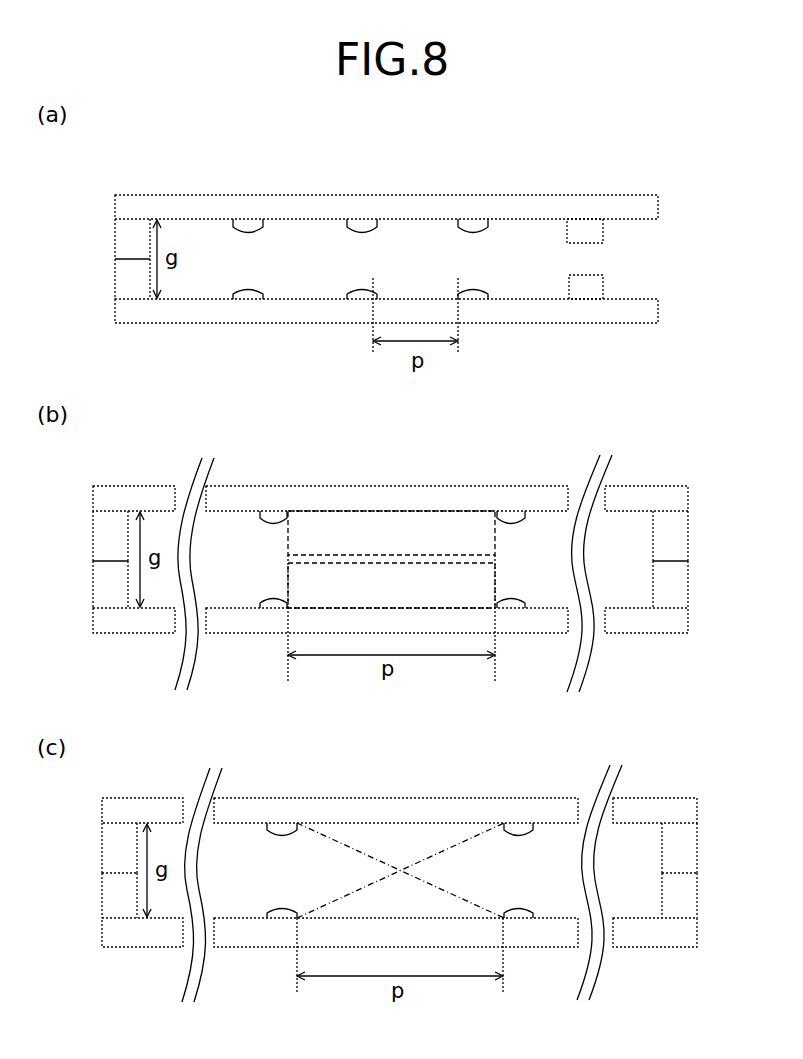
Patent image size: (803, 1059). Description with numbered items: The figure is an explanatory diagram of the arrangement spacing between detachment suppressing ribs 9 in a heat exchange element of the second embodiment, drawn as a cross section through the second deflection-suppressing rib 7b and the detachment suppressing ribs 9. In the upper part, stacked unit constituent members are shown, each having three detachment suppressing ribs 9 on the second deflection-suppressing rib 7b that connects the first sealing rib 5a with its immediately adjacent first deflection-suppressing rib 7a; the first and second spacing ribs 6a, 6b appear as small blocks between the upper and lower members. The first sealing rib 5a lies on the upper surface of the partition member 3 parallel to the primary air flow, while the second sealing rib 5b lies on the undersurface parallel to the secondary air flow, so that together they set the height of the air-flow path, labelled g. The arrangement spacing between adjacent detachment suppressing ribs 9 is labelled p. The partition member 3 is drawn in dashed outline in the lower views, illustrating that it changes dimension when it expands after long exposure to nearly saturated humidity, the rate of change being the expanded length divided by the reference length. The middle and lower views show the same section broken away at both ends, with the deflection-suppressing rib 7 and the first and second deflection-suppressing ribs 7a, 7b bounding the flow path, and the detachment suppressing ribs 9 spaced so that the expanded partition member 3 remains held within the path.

The partition member 3 is at (418, 218).
The first sealing rib 5a is at (128, 272).
The second sealing rib 5b is at (128, 232).
The first spacing rib 6a is at (590, 290).
The second spacing rib 6b is at (585, 228).
The deflection-suppressing rib 7 is at (670, 620).
The first deflection-suppressing rib 7a is at (137, 208).
The second deflection-suppressing rib 7b is at (126, 330).
The detachment suppressing rib 9 is at (245, 220).